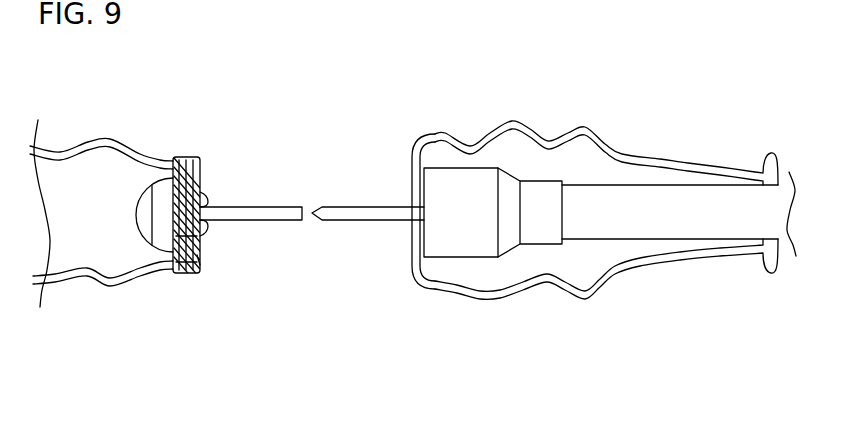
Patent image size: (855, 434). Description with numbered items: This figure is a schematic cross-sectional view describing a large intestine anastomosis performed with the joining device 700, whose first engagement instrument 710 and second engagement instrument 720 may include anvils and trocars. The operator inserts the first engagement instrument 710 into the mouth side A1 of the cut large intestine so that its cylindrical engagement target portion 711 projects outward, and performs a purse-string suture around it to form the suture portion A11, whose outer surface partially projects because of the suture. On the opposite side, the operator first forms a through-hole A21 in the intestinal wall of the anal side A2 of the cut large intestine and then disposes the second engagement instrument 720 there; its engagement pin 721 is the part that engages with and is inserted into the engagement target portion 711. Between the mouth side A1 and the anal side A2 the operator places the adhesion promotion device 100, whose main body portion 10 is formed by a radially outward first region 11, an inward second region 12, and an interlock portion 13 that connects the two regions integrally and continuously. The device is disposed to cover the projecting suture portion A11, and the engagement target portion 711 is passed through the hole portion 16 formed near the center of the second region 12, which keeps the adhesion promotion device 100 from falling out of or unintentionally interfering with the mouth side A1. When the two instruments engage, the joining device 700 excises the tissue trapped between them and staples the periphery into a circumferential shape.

The mouth side of the cut large intestine A1 is at (44, 135).
The suture portion A11 is at (168, 222).
The main body portion 10 is at (225, 192).
The first region 11 is at (181, 268).
The second region 12 is at (194, 236).
The interlock portion 13 is at (200, 180).
The hole portion 16 is at (203, 211).
The adhesion promotion device 100 is at (200, 263).
The engagement target portion 711 is at (242, 207).
The engagement pin 721 is at (332, 207).
The through-hole A21 is at (426, 214).
The anal side of the cut large intestine A2 is at (609, 132).
The first engagement instrument 710 is at (195, 230).
The second engagement instrument 720 is at (544, 230).
The joining device 700 is at (439, 250).